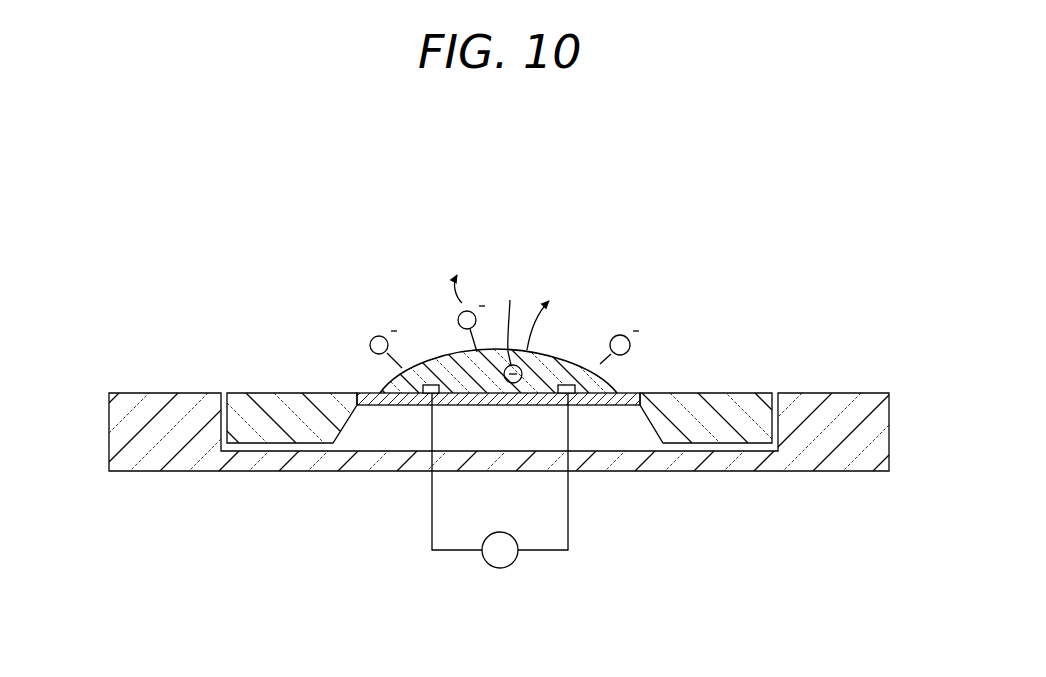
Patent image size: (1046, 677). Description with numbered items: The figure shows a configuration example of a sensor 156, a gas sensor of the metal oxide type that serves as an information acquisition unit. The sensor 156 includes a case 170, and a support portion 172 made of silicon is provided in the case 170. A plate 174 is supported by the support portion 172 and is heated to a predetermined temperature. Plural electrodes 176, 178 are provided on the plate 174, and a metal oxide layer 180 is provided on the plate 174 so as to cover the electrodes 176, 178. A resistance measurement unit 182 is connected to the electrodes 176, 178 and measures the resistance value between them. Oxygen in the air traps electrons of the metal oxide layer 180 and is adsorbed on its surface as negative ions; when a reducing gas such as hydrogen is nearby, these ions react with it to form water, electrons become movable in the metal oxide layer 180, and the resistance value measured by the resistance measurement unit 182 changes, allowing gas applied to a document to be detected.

The sensor 156 is at (203, 334).
The case 170 is at (830, 472).
The support portion 172 is at (750, 397).
The plate 174 is at (368, 392).
The electrode 176 is at (429, 384).
The electrode 178 is at (571, 383).
The metal oxide layer 180 is at (447, 355).
The resistance measurement unit 182 is at (500, 568).